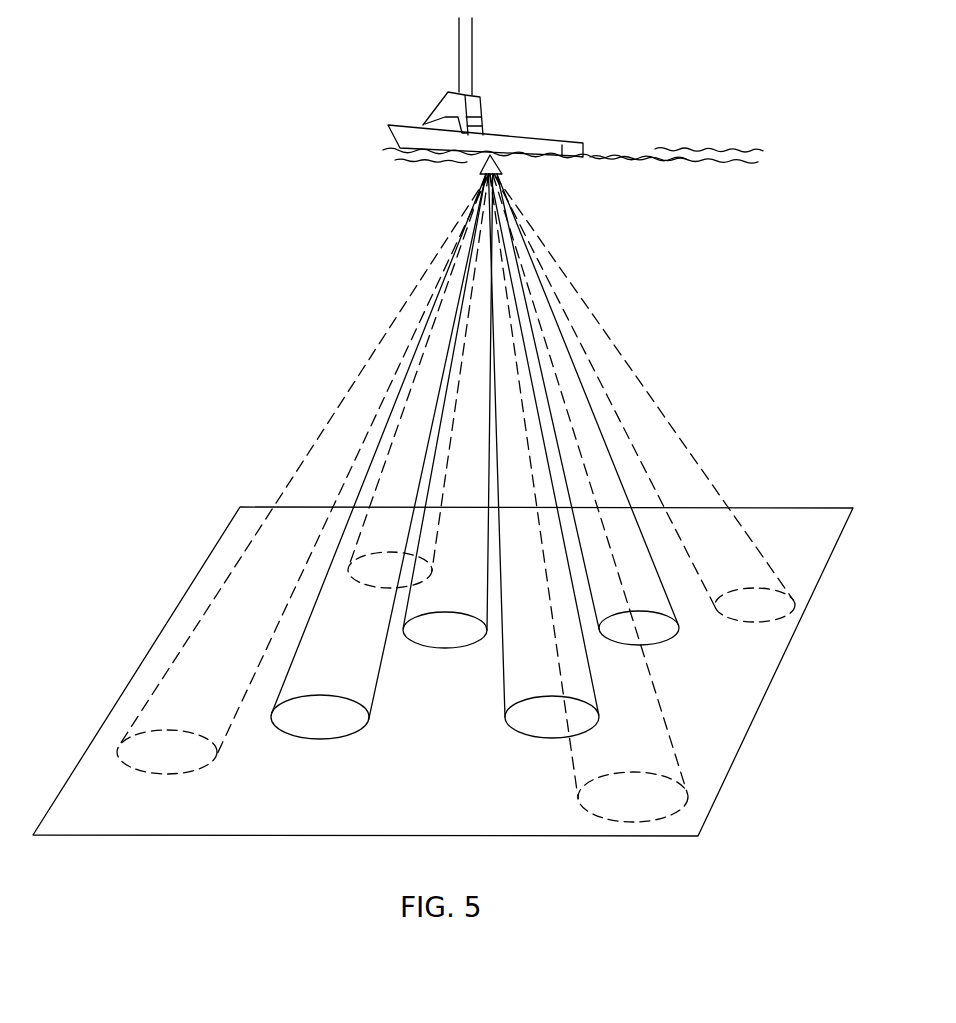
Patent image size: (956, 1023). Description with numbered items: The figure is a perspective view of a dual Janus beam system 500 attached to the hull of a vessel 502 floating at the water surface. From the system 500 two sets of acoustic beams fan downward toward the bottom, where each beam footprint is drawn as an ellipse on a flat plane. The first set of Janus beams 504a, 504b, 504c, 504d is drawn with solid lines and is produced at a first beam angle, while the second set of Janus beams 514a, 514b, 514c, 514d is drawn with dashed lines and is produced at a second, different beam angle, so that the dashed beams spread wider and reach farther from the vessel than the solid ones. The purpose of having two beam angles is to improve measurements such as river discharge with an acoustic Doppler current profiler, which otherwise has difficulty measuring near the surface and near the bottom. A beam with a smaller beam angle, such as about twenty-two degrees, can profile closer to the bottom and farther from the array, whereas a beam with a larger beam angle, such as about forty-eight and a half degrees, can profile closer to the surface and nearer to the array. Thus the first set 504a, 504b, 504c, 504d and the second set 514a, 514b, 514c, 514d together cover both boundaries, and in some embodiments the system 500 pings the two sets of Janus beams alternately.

The dual Janus beam system 500 is at (490, 155).
The vessel 502 is at (478, 97).
The Janus beam of the first set 504a is at (322, 738).
The Janus beam of the first set 504b is at (507, 723).
The Janus beam of the first set 504c is at (675, 633).
The Janus beam of the first set 504d is at (425, 647).
The Janus beam of the second set 514a is at (117, 752).
The Janus beam of the second set 514b is at (580, 802).
The Janus beam of the second set 514c is at (700, 462).
The Janus beam of the second set 514d is at (360, 537).